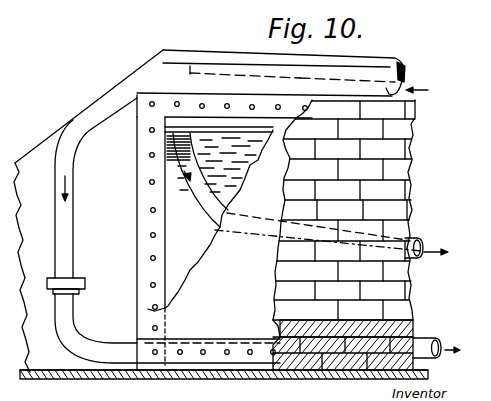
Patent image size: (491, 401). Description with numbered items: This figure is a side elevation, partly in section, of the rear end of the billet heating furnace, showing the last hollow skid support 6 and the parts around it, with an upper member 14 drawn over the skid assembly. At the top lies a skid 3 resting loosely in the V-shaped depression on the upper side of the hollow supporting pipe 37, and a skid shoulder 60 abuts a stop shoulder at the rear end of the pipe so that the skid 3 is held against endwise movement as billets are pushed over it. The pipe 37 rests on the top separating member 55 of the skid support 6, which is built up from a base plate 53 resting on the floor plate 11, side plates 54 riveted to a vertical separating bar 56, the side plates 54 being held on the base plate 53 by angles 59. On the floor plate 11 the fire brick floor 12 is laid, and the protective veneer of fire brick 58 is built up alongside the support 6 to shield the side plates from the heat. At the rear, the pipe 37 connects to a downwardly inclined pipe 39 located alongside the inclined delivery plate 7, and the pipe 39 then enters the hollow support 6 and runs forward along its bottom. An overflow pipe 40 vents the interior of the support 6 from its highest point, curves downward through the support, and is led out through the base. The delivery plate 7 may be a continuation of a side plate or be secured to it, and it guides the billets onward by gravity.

The skid 3 is at (373, 58).
The skid support 6 is at (400, 172).
The delivery plate 7 is at (32, 151).
The floor plate 11 is at (55, 377).
The fire brick floor 12 is at (413, 330).
The top cover 14 is at (163, 50).
The pipe 37 is at (350, 88).
The downwardly inclined pipe 39 is at (108, 110).
The overflow pipe 40 is at (232, 181).
The base plate 53 is at (160, 370).
The side plate 54 is at (216, 247).
The top separating member 55 is at (229, 119).
The vertical separating bar 56 is at (165, 222).
The fire brick 58 is at (280, 273).
The angle 59 is at (200, 343).
The skid shoulder 60 is at (190, 70).